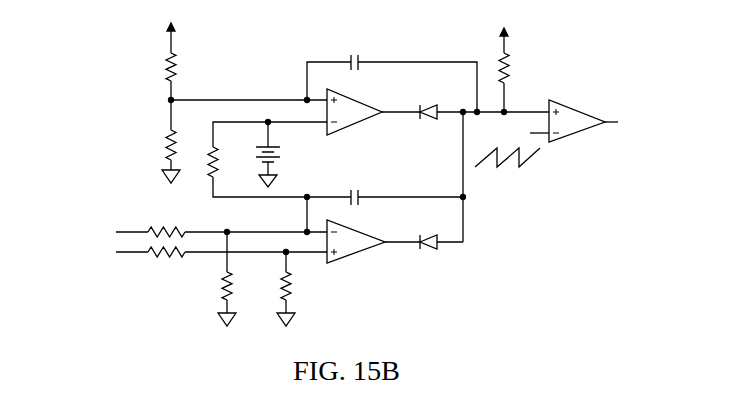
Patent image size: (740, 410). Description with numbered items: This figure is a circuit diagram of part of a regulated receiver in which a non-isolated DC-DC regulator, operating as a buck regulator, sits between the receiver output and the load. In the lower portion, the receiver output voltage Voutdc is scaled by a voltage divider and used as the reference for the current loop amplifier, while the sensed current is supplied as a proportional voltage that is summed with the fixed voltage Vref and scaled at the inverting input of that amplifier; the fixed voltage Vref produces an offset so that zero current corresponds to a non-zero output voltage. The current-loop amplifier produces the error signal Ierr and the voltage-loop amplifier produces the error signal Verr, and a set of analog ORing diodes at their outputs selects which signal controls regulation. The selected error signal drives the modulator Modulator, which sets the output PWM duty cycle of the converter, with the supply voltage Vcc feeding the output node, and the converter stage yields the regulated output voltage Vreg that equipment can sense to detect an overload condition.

The regulated output voltage Vreg is at (241, 96).
The error signal Verr is at (428, 148).
The fixed voltage Vref is at (337, 163).
The supply pull-up resistor Vcc is at (505, 64).
The PWM modulator comparator Modulator is at (551, 133).
The PWM duty cycle PWM is at (637, 124).
The receiver output voltage Voutdc is at (193, 286).
The error signal Ierr is at (395, 241).